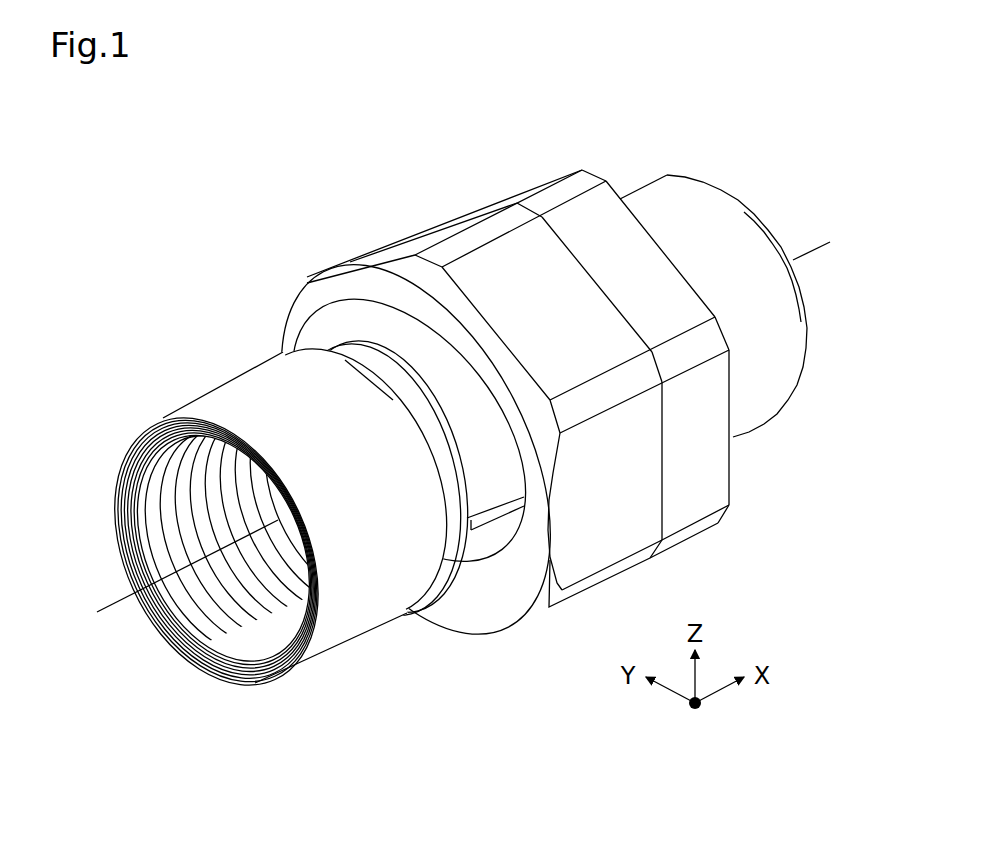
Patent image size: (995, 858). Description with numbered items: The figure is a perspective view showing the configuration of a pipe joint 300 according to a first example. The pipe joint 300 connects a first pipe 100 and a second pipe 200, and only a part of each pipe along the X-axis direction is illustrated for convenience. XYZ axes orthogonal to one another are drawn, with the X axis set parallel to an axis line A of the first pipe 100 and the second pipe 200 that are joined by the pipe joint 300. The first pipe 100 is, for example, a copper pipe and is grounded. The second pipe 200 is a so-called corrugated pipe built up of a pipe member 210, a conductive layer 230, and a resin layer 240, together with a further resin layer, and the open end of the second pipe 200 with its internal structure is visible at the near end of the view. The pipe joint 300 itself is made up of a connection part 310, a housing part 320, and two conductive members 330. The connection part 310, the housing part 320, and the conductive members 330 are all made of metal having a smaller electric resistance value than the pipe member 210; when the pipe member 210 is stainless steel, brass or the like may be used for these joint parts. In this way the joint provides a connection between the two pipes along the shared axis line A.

The first pipe 100 is at (672, 198).
The second pipe 200 is at (230, 292).
The pipe member 210 is at (177, 563).
The resin layer 240 is at (250, 403).
The conductive layer 230 is at (390, 377).
The pipe joint 300 is at (262, 146).
The connection part 310 is at (498, 198).
The housing part 320 is at (397, 248).
The conductive member 330 is at (352, 332).
The axis line A is at (818, 243).